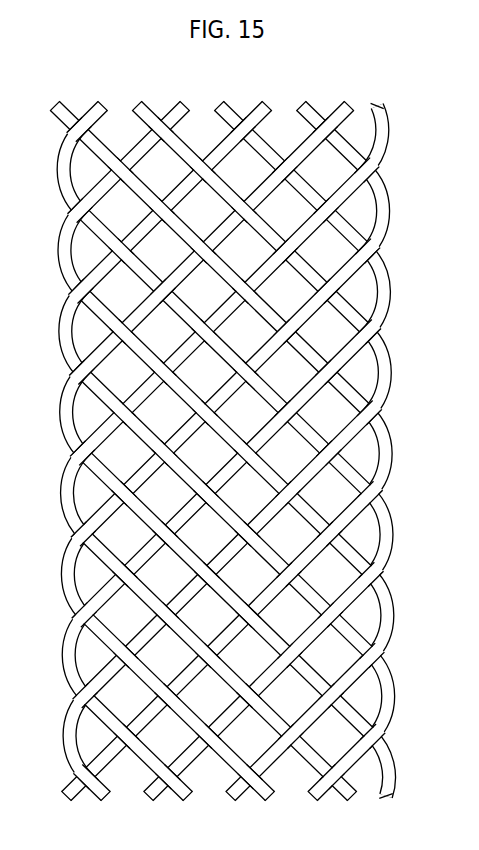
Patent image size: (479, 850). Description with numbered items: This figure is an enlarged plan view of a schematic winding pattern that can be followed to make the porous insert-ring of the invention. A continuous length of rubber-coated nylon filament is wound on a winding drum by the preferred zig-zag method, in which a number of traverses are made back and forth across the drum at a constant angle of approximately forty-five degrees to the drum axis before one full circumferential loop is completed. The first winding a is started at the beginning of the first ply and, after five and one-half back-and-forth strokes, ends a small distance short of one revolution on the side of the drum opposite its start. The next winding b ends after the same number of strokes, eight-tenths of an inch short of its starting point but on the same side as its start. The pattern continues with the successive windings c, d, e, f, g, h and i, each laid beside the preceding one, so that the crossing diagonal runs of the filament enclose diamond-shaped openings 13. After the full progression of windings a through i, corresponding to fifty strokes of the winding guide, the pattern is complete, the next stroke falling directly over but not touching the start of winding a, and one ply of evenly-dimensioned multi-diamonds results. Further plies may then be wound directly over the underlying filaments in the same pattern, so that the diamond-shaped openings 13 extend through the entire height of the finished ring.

The diamond-shaped openings 13 is at (245, 448).
The winding a is at (233, 448).
The winding b is at (353, 208).
The winding c is at (223, 448).
The winding d is at (222, 448).
The winding e is at (223, 448).
The winding f is at (223, 448).
The winding g is at (222, 448).
The winding h is at (223, 448).
The winding i is at (223, 448).